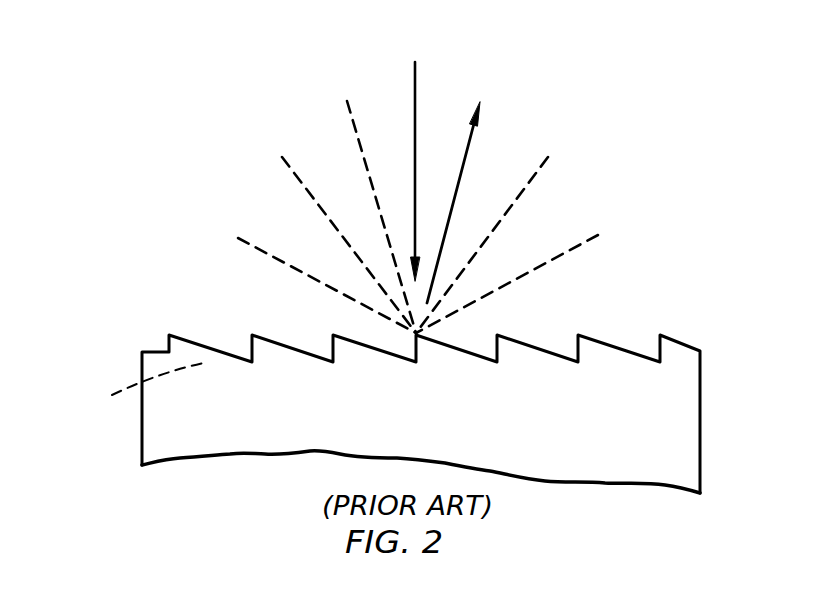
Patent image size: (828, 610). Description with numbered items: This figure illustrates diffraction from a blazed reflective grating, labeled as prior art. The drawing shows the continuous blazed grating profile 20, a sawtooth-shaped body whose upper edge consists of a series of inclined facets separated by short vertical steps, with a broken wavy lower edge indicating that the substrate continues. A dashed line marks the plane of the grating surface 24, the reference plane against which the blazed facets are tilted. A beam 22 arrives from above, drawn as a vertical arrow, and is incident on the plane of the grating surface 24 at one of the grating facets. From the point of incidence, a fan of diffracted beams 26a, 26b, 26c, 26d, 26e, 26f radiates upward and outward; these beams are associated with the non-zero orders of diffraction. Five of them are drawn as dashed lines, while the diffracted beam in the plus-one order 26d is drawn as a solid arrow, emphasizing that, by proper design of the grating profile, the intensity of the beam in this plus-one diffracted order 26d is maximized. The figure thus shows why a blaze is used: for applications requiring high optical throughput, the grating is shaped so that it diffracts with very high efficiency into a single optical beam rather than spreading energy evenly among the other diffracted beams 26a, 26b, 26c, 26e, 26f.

The continuous blazed grating profile 20 is at (168, 348).
The beam 22 is at (413, 85).
The plane of the grating surface 24 is at (145, 386).
The diffracted beam 26a is at (260, 253).
The diffracted beam 26b is at (298, 182).
The diffracted beam 26c is at (350, 122).
The +1 diffracted order beam 26d is at (472, 148).
The diffracted beam 26e is at (531, 183).
The diffracted beam 26f is at (558, 257).